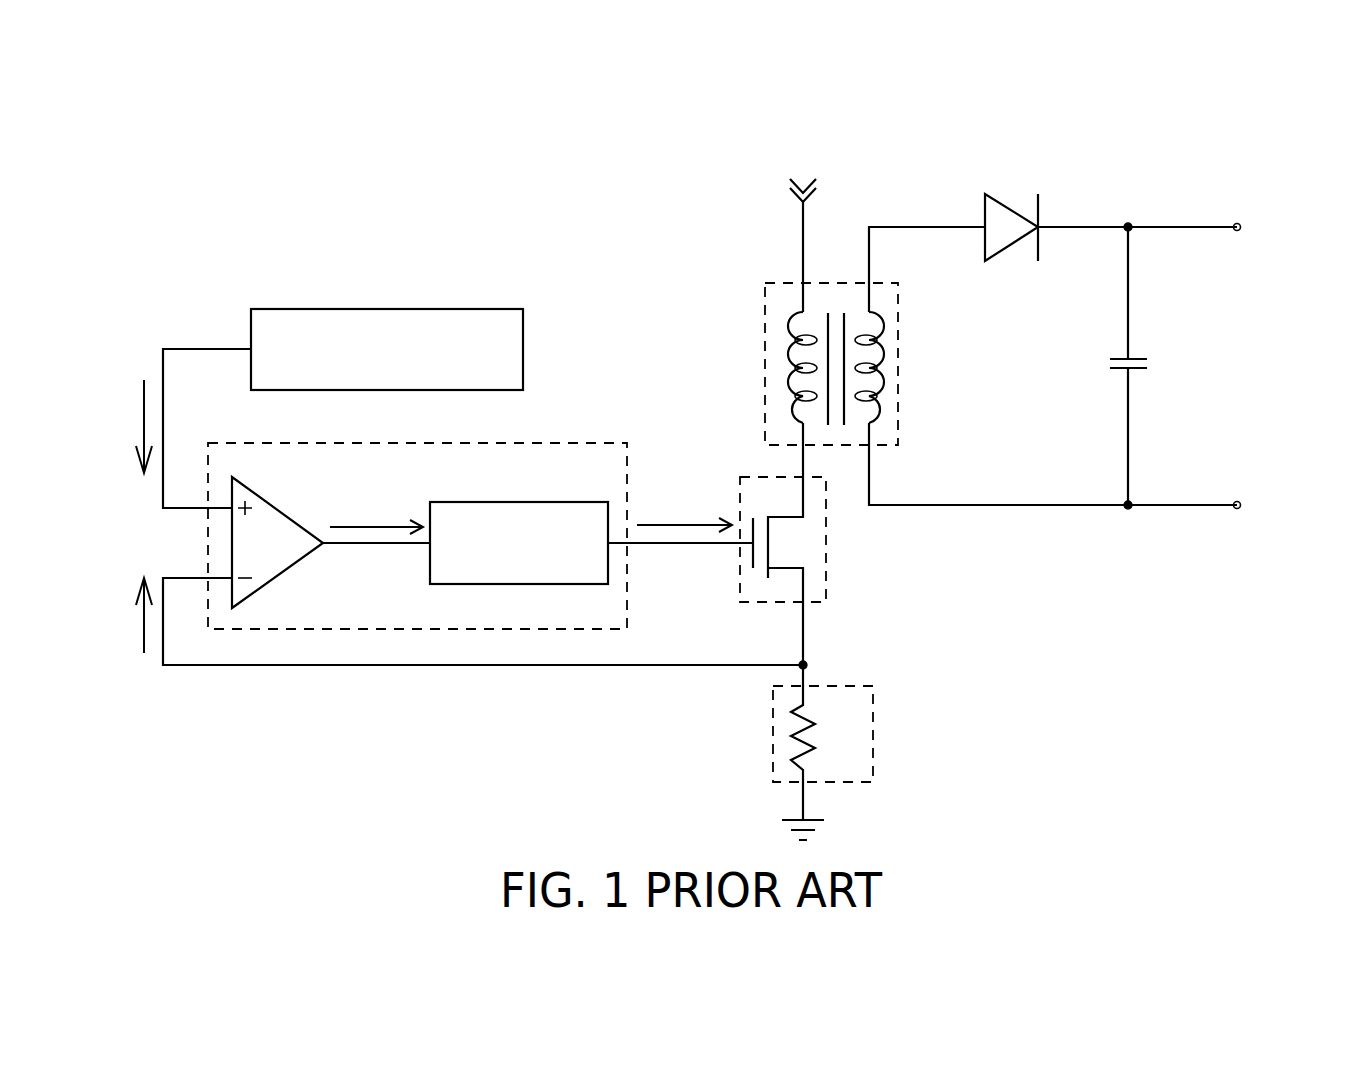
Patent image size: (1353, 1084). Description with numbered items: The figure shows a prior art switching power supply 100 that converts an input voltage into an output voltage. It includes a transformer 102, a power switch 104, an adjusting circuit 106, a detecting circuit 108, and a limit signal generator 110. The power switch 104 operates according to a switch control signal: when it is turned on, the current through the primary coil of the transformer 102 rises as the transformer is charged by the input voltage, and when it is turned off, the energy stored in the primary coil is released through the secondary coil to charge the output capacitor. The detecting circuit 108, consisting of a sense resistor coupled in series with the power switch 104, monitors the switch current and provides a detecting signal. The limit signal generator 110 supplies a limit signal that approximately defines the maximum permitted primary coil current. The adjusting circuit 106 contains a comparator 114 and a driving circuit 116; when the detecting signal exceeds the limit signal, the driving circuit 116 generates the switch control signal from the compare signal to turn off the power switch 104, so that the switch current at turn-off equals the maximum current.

The switching power supply 100 is at (1190, 169).
The transformer 102 is at (765, 367).
The power switch 104 is at (826, 538).
The adjusting circuit 106 is at (520, 442).
The detecting circuit 108 is at (773, 740).
The limit signal generator 110 is at (384, 307).
The comparator 114 is at (277, 577).
The driving circuit 116 is at (520, 500).